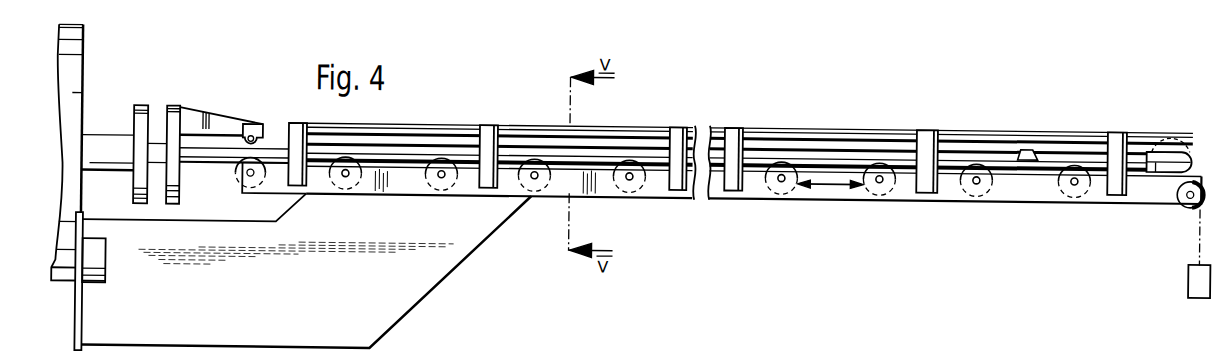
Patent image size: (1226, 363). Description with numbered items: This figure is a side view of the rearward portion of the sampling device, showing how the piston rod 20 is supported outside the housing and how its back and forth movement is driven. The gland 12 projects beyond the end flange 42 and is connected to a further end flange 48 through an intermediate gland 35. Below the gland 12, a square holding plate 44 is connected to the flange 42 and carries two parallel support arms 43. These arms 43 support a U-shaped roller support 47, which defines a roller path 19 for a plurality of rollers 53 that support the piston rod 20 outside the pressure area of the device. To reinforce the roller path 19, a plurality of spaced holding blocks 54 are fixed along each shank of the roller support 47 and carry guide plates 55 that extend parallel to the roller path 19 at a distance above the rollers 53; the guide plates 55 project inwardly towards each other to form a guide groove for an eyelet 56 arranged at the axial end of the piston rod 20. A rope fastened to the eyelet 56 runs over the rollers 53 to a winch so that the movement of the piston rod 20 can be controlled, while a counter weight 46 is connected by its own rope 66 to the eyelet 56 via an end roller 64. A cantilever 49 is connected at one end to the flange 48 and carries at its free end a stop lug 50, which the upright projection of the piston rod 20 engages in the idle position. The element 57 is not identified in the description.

The gland 12 is at (107, 145).
The roller path 19 is at (828, 180).
The piston rod 20 is at (210, 153).
The intermediate gland 35 is at (160, 150).
The end flange 42 is at (78, 46).
The support arms 43 is at (427, 294).
The square holding plate 44 is at (78, 330).
The counter weight 46 is at (1190, 267).
The U-shaped roller support 47 is at (653, 181).
The further end flange 48 is at (177, 108).
The cantilever 49 is at (218, 119).
The stop lug 50 is at (249, 128).
The rollers 53 is at (882, 161).
The holding blocks 54 is at (488, 130).
The guide plates 55 is at (637, 126).
The eyelet 56 is at (1190, 138).
The stop 57 is at (1027, 141).
The end roller 64 is at (1181, 199).
The rope 66 is at (1198, 223).